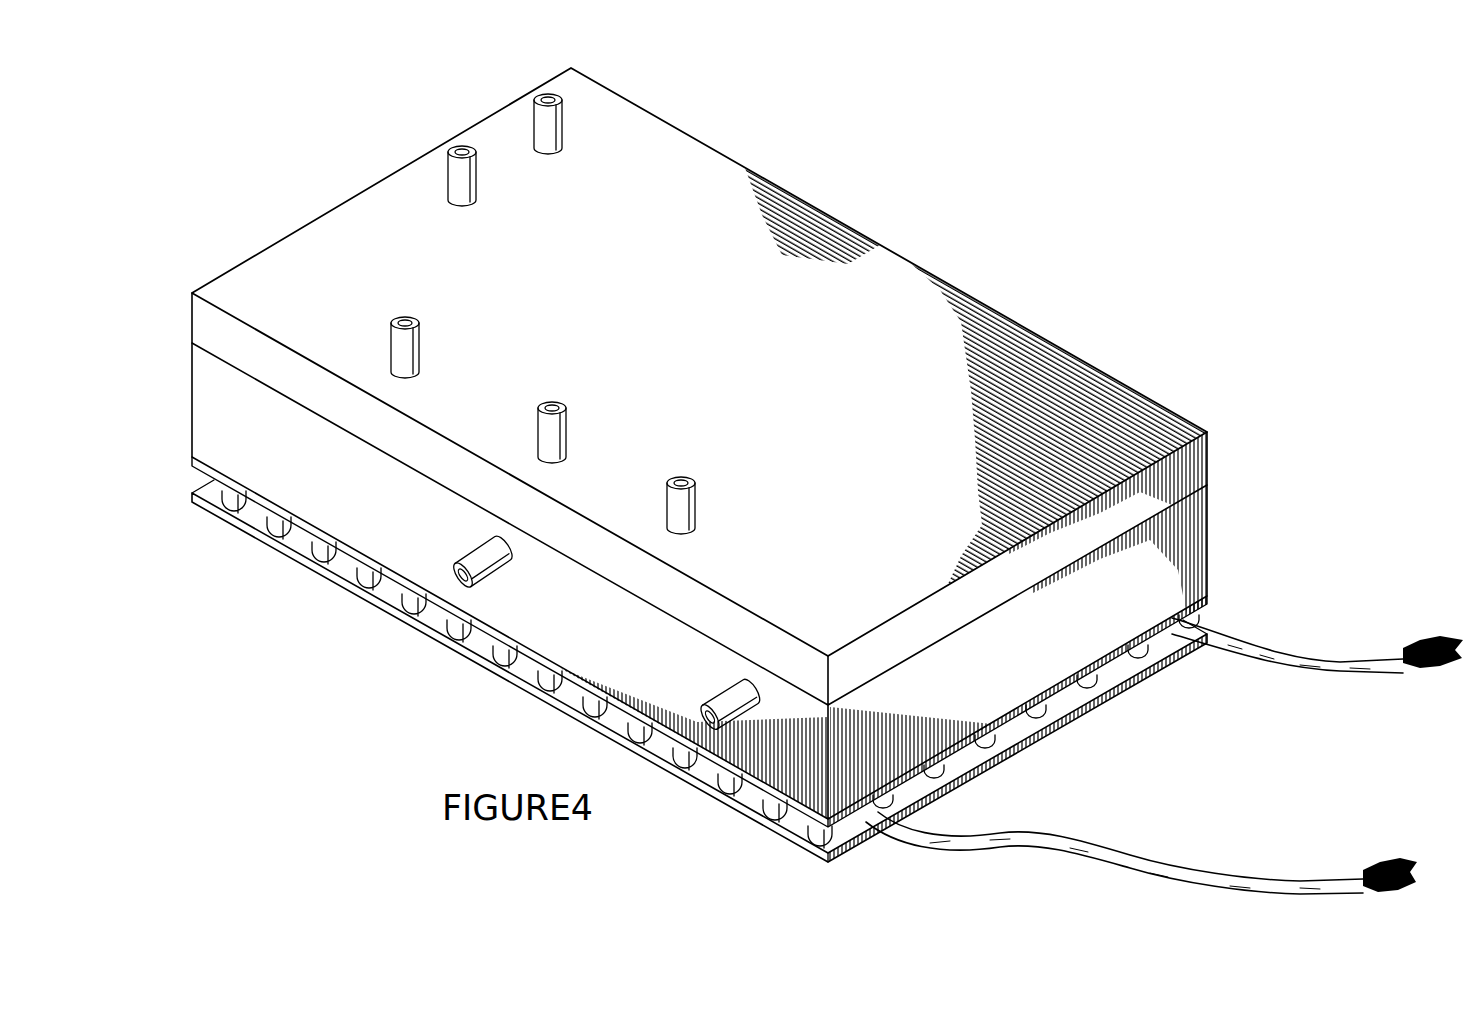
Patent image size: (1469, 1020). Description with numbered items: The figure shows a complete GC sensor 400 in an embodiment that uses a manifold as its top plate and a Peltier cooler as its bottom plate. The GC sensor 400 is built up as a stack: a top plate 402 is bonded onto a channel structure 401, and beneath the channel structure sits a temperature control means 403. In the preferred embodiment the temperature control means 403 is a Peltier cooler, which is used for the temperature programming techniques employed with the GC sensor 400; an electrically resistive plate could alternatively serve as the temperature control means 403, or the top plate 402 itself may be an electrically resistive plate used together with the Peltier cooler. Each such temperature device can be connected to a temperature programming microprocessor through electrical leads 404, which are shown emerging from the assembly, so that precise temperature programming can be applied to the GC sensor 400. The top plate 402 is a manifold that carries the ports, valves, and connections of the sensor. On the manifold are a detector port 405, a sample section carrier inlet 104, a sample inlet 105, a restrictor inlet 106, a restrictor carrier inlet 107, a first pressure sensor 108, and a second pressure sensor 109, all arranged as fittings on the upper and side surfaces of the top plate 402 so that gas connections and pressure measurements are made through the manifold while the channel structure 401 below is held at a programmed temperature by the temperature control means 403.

The GC sensor 400 is at (1017, 141).
The channel structure 401 is at (1207, 550).
The top plate 402 is at (1105, 373).
The temperature control means 403 is at (773, 825).
The electrical leads 404 is at (1182, 877).
The detector port 405 is at (703, 716).
The sample section carrier inlet 104 is at (560, 118).
The sample inlet 105 is at (450, 177).
The restrictor inlet 106 is at (395, 350).
The restrictor carrier inlet 107 is at (456, 578).
The first pressure sensor 108 is at (568, 435).
The second pressure sensor 109 is at (698, 490).